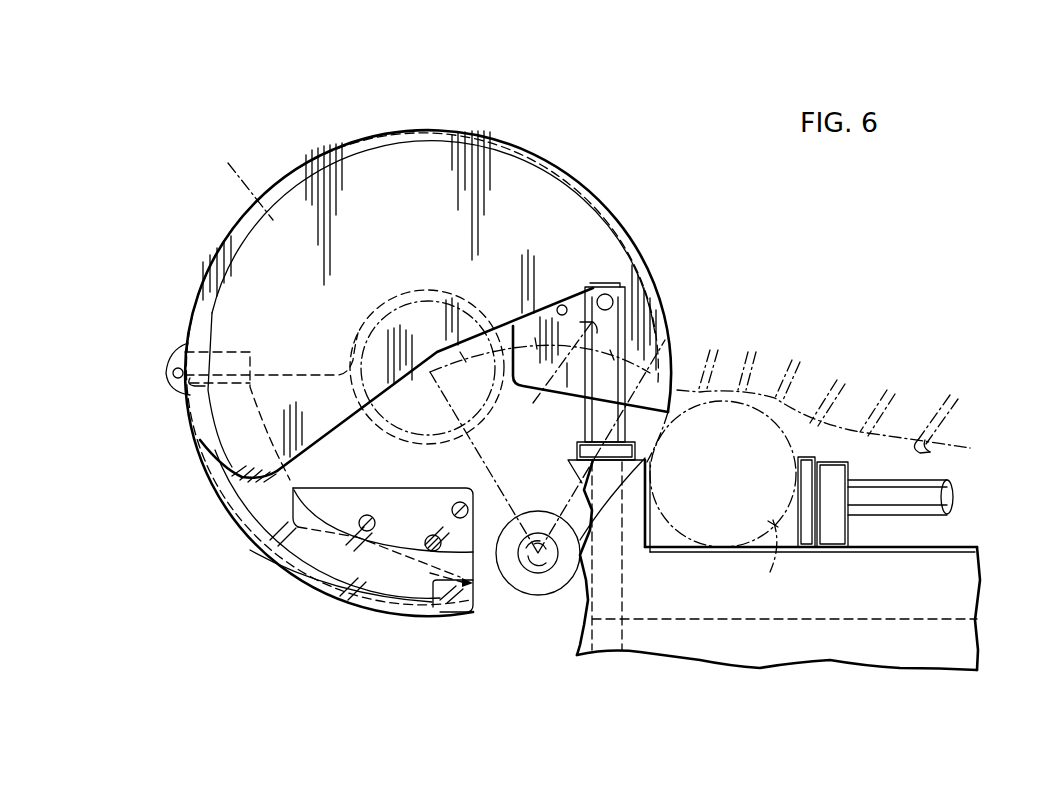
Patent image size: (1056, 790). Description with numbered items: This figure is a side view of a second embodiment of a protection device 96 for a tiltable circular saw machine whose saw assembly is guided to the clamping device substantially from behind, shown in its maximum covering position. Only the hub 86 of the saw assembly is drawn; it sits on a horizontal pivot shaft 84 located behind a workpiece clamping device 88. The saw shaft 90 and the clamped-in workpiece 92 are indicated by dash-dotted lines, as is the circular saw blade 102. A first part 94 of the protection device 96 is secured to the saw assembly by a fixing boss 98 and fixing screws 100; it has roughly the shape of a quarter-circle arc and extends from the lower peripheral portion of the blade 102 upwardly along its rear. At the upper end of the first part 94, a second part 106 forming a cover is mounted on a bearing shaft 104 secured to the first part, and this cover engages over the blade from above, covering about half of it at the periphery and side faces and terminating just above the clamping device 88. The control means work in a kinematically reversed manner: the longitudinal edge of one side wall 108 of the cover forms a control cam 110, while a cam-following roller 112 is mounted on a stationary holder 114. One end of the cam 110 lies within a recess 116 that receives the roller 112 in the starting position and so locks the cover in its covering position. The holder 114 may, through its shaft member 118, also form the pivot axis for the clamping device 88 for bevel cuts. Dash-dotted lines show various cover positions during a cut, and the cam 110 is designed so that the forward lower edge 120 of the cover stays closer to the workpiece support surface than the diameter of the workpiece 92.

The horizontal pivot shaft 84 is at (548, 566).
The hub 86 is at (519, 583).
The workpiece clamping device 88 is at (808, 438).
The saw shaft 90 is at (390, 425).
The workpiece 92 is at (774, 561).
The first part 94 is at (236, 535).
The protection device 96 is at (203, 255).
The fixing boss 98 is at (400, 498).
The fixing screws 100 is at (459, 502).
The circular saw blade 102 is at (268, 216).
The bearing shaft 104 is at (166, 374).
The second part 106 is at (379, 124).
The side wall 108 is at (536, 189).
The control cam 110 is at (561, 304).
The cam-following roller 112 is at (600, 288).
The stationary holder 114 is at (603, 390).
The recess 116 is at (545, 388).
The shaft member 118 is at (608, 565).
The forward lower edge 120 is at (670, 418).